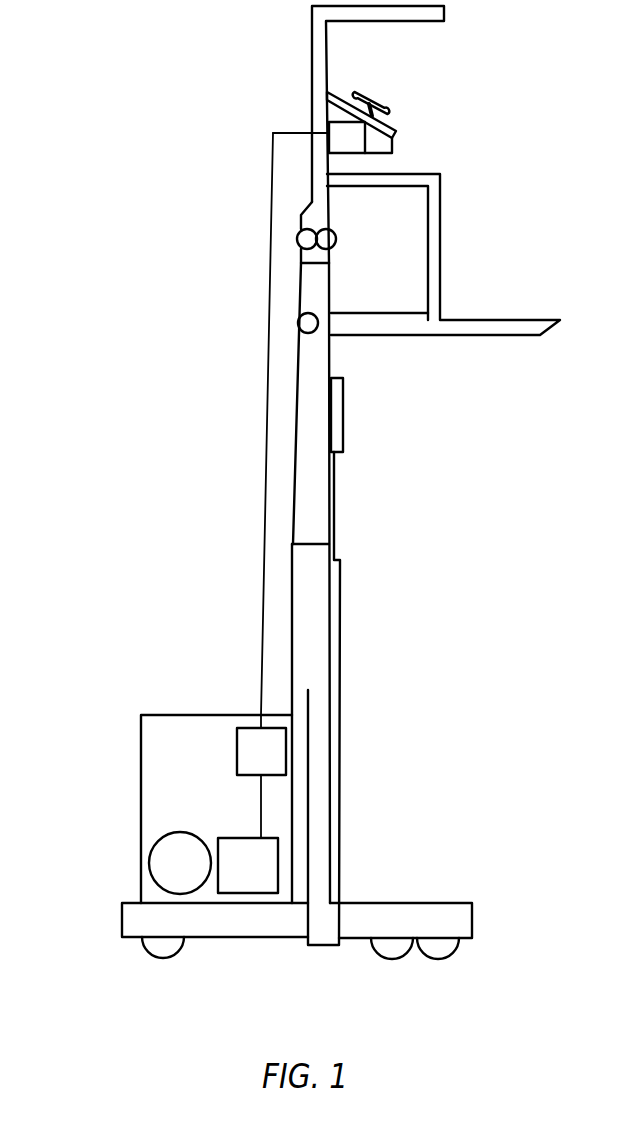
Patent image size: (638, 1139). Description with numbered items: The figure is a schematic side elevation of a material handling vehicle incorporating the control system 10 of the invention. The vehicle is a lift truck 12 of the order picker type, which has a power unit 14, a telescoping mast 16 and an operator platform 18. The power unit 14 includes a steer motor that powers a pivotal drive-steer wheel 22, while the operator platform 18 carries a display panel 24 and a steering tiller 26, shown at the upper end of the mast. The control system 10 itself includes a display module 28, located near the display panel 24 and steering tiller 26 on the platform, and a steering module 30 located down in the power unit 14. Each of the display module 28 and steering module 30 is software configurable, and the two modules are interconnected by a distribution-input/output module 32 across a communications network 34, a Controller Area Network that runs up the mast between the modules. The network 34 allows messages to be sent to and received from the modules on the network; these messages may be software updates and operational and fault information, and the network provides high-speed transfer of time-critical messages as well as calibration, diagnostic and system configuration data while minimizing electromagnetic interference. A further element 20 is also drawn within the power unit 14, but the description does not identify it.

The control system 10 is at (229, 824).
The lift truck 12 is at (352, 514).
The power unit 14 is at (175, 774).
The telescoping mast 16 is at (312, 599).
The operator platform 18 is at (370, 323).
The battery / power unit 20 is at (175, 862).
The drive-steer wheel 22 is at (146, 947).
The display panel 24 is at (390, 124).
The steering tiller 26 is at (372, 100).
The display module 28 is at (343, 134).
The steering module 30 is at (258, 862).
The distribution-input/output module 32 is at (265, 758).
The communications network 34 is at (262, 570).